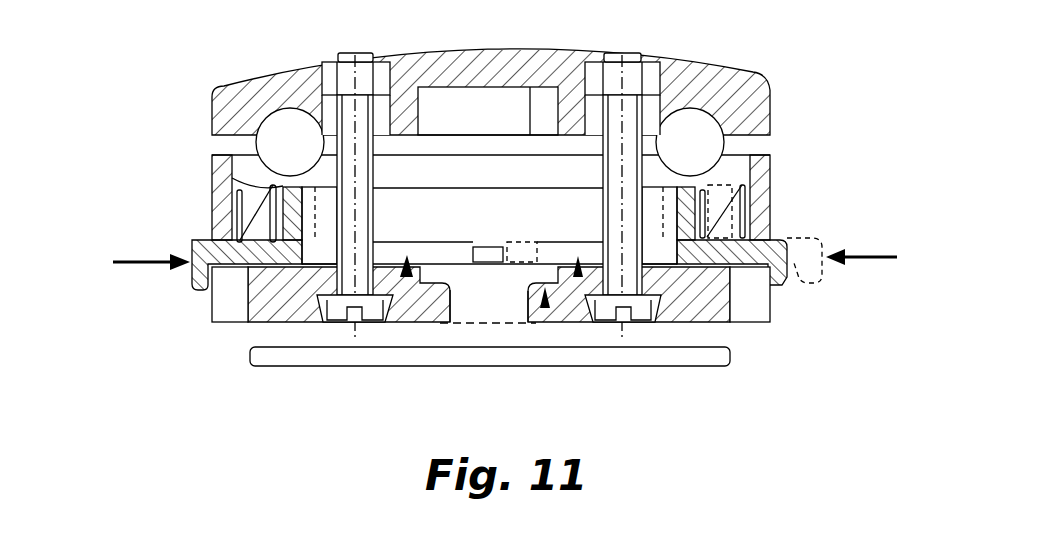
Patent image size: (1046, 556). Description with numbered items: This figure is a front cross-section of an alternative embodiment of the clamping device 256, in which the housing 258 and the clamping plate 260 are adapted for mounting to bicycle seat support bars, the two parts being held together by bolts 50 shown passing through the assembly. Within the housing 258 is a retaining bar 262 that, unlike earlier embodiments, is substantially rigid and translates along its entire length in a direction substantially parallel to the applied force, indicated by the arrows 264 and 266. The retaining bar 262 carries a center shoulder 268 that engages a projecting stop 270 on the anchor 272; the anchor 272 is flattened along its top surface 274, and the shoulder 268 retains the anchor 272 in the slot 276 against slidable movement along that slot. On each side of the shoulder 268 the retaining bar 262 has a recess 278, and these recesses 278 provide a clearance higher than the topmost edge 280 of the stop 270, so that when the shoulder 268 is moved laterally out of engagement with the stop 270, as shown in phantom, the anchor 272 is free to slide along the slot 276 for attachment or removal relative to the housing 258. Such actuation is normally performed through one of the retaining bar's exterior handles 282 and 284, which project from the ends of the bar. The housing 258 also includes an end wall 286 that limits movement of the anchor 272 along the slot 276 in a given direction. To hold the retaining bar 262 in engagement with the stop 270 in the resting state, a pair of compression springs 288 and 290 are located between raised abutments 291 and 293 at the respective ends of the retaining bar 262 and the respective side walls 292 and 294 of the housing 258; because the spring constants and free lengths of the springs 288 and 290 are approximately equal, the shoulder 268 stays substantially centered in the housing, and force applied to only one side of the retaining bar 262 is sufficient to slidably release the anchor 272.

The bolt 50 is at (345, 118).
The clamping device 256 is at (762, 66).
The housing 258 is at (724, 312).
The clamping plate 260 is at (445, 72).
The retaining bar 262 is at (427, 226).
The arrow 264 is at (133, 252).
The arrow 266 is at (878, 262).
The center shoulder 268 is at (520, 326).
The projecting stop 270 is at (476, 265).
The anchor 272 is at (502, 285).
The top surface 274 is at (550, 250).
The slot 276 is at (546, 310).
The recess 278 is at (405, 278).
The topmost edge 280 is at (502, 232).
The exterior handle 282 is at (192, 275).
The exterior handle 284 is at (782, 285).
The end wall 286 is at (445, 318).
The compression spring 288 is at (213, 178).
The compression spring 290 is at (768, 182).
The raised abutment 291 is at (291, 190).
The side wall 292 is at (212, 160).
The raised abutment 293 is at (683, 183).
The side wall 294 is at (770, 165).